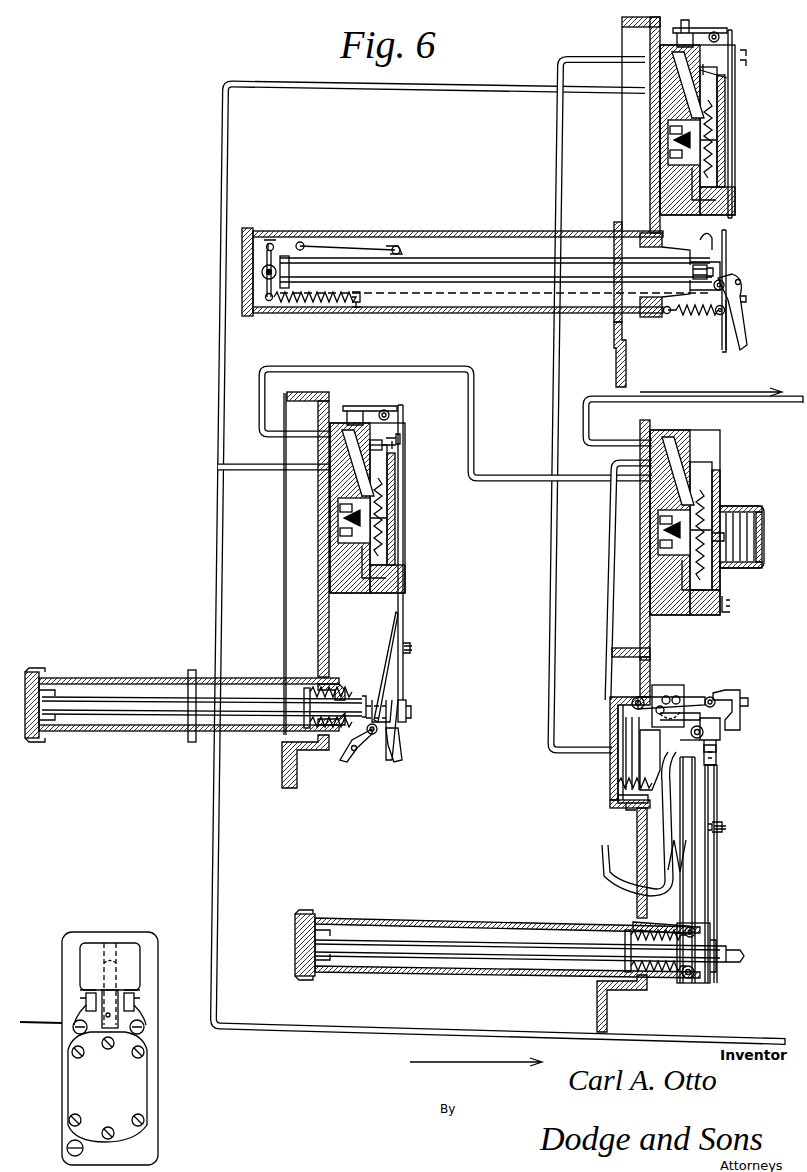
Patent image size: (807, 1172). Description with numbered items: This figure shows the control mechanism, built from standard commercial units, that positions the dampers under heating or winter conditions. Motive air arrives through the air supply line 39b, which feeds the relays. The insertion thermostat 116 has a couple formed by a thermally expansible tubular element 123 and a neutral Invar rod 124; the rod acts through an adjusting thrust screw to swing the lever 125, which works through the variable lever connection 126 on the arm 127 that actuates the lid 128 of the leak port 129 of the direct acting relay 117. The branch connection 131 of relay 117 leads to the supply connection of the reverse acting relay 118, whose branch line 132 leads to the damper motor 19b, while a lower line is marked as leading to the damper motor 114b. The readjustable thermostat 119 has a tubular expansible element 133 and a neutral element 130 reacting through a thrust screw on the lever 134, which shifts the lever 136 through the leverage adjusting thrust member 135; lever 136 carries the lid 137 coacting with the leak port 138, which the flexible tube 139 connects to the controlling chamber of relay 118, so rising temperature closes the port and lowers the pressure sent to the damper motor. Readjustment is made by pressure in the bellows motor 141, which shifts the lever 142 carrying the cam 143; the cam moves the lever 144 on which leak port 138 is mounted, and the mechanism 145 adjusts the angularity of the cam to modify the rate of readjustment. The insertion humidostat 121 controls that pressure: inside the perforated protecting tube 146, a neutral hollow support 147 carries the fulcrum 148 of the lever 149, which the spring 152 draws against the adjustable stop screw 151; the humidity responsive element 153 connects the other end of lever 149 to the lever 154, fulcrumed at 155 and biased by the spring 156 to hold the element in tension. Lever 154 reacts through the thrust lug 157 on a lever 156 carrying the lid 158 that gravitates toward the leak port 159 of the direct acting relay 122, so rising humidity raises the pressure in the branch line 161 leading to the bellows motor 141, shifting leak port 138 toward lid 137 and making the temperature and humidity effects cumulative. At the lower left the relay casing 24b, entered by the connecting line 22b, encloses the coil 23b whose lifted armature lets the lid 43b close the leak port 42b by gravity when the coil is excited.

The air supply line 39b is at (328, 88).
The branch line 161 is at (553, 558).
The branch connection 131 is at (473, 424).
The branch line 132 is at (736, 404).
The damper motor 19b is at (721, 383).
The damper motor 114b is at (459, 1054).
The insertion humidostat 121 is at (640, 28).
The relay 122 is at (727, 78).
The lid 158 is at (680, 28).
The leak port 159 is at (720, 38).
The lever 156 is at (733, 128).
The lever 154 is at (727, 246).
The thrust lug 157 is at (713, 272).
The fulcrum 155 is at (724, 284).
The stop screw 151 is at (749, 290).
The perforated protecting tube 146 is at (396, 236).
The neutral hollow support 147 is at (450, 257).
The humidity responsive element 153 is at (345, 245).
The lever 149 is at (265, 247).
The fulcrum 148 is at (262, 273).
The spring 152 is at (340, 304).
The insertion thermostat 116 is at (292, 583).
The relay 117 is at (345, 420).
The leak port 129 is at (400, 436).
The lid 128 is at (396, 446).
The arm 127 is at (404, 476).
The variable lever connection 126 is at (411, 645).
The lever 125 is at (380, 657).
The thermally expansible tubular element 123 is at (136, 678).
The neutral rod 124 is at (96, 716).
The reverse acting relay 118 is at (707, 458).
The readjustable thermostat 119 is at (650, 672).
The angularity adjusting mechanism 145 is at (670, 686).
The lever 142 is at (696, 698).
The cam 143 is at (728, 693).
The lever 144 is at (722, 722).
The lid 137 is at (720, 746).
The leak port 138 is at (716, 767).
The lever 136 is at (712, 793).
The leverage adjusting thrust member 135 is at (722, 827).
The lever 134 is at (708, 876).
The bellows motor 141 is at (624, 771).
The flexible tube 139 is at (606, 872).
The tubular expansible element 133 is at (420, 918).
The neutral element 130 is at (462, 941).
The relay casing 24b is at (158, 1088).
The coil 23b is at (105, 943).
The lid 43b is at (122, 1012).
The connecting line 22b is at (36, 1021).
The leak port 42b is at (110, 1032).